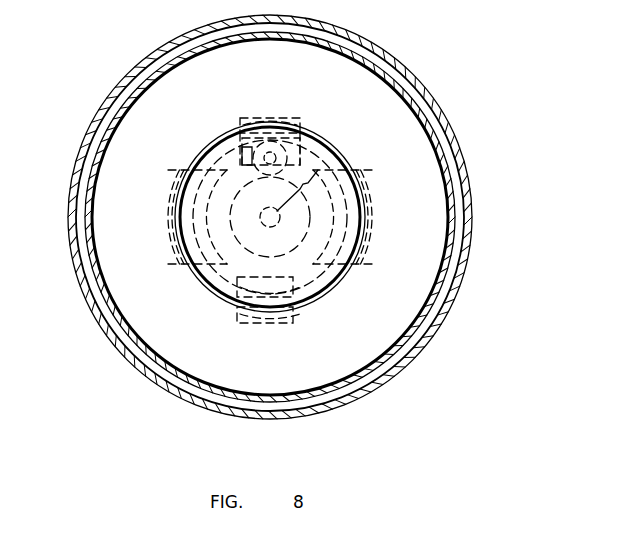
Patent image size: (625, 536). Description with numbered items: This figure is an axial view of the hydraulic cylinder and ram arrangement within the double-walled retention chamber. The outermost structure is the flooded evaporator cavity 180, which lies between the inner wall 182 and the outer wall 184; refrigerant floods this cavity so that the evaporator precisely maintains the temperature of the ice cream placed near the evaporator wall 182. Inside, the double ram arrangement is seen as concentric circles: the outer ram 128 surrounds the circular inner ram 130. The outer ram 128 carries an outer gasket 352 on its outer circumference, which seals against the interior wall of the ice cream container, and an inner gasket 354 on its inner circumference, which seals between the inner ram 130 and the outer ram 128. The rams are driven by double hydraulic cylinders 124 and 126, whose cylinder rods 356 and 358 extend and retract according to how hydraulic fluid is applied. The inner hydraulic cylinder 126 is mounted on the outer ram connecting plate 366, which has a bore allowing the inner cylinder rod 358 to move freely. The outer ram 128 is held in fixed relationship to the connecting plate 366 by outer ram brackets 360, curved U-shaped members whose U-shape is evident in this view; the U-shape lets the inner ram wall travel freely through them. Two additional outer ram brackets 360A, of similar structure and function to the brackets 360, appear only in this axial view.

The outer hydraulic cylinder 124 is at (318, 170).
The inner hydraulic cylinder 126 is at (242, 153).
The outer ram 128 is at (173, 315).
The inner ram 130 is at (320, 150).
The flooded evaporator cavity 180 is at (517, 283).
The inner wall 182 is at (450, 185).
The outer wall 184 is at (457, 147).
The outer gasket 352 is at (420, 113).
The inner gasket 354 is at (335, 287).
The cylinder rod 356 is at (327, 170).
The inner cylinder rod 358 is at (245, 162).
The outer ram bracket 360 is at (273, 122).
The additional outer ram bracket 360A is at (166, 200).
The outer ram connecting plate 366 is at (337, 282).